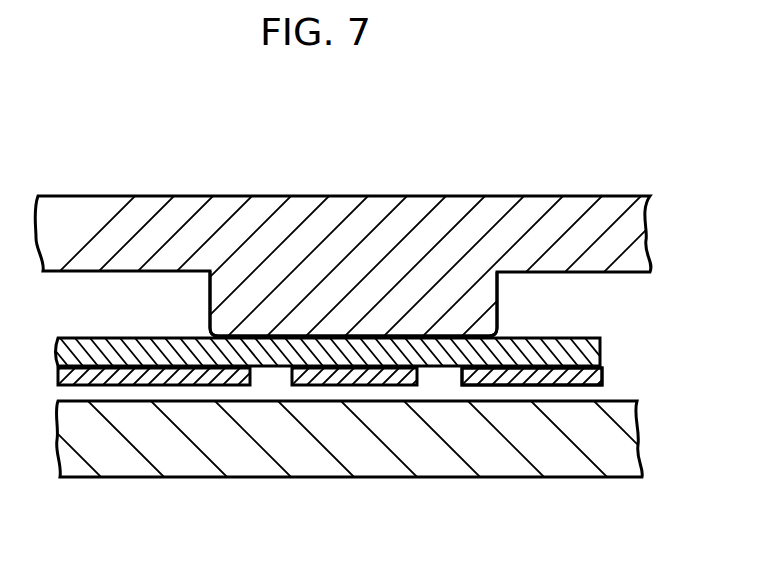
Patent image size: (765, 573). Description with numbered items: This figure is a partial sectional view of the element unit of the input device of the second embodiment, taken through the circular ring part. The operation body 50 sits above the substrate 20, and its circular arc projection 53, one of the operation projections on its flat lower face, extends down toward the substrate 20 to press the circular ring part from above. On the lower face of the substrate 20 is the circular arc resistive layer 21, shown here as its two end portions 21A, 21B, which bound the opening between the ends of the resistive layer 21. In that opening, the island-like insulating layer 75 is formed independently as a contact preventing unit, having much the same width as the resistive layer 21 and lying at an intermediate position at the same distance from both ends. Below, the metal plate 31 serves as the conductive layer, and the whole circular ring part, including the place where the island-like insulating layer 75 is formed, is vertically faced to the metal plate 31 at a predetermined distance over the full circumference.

The operation body 50 is at (140, 207).
The circular arc projection 53 is at (352, 302).
The substrate 20 is at (600, 347).
The circular arc resistive layer 21 is at (593, 380).
The circular arc resistive layer end 21A is at (480, 377).
The circular arc resistive layer end 21B is at (230, 377).
The island-like insulating layer 75 is at (352, 377).
The metal plate 31 is at (117, 467).